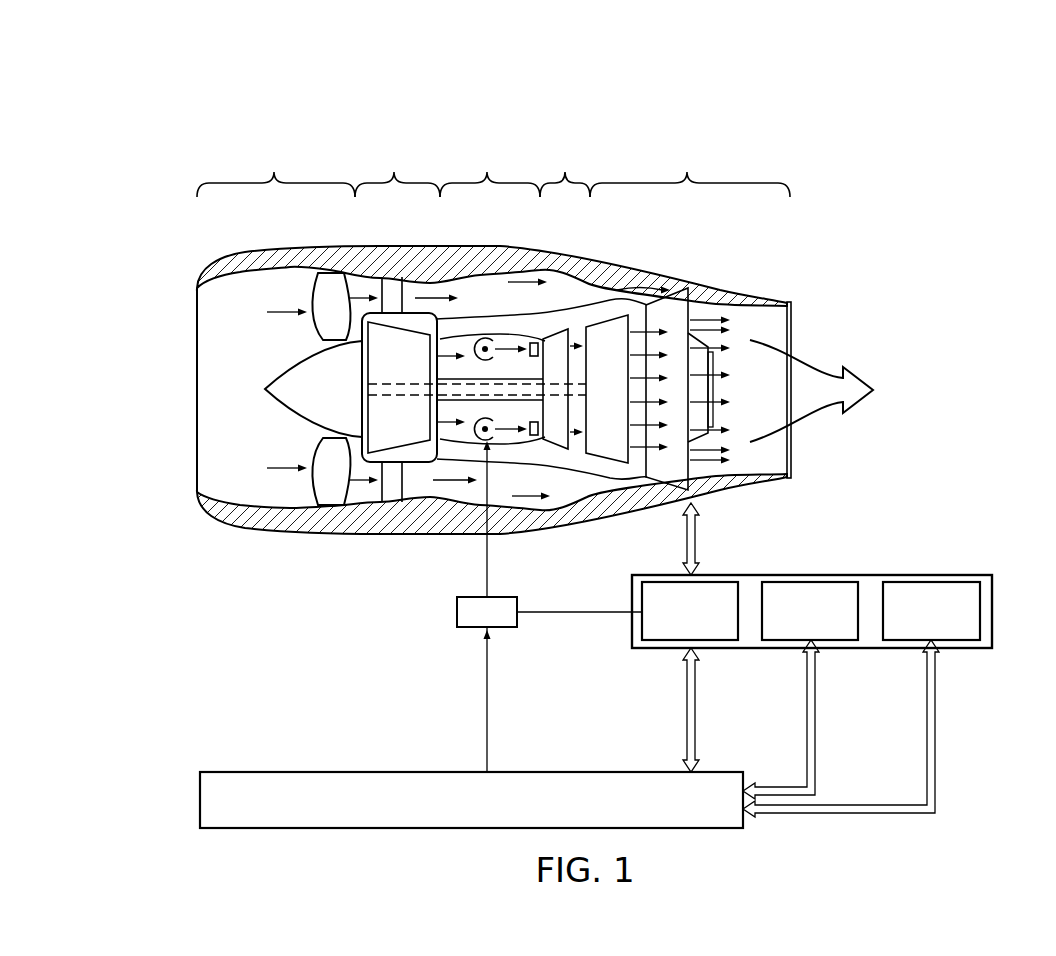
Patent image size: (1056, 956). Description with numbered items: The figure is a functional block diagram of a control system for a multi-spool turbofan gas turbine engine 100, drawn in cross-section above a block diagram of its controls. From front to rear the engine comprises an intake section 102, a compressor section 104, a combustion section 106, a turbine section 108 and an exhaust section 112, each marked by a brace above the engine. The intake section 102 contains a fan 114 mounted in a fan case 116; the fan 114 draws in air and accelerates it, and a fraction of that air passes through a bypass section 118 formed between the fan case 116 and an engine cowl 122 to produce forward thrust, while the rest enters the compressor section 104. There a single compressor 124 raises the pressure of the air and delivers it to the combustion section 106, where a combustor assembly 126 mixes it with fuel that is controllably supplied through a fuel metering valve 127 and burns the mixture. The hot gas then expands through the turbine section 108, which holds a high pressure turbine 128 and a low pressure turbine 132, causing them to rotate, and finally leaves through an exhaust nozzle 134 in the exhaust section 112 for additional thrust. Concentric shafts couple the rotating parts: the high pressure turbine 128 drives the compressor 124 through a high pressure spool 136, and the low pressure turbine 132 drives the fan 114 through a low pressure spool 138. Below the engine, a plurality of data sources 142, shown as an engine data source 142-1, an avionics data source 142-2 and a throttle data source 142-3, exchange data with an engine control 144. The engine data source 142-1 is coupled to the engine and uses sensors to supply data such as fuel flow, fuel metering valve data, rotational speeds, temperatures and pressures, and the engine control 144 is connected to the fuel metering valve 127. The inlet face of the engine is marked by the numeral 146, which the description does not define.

The multi-spool turbofan gas turbine engine 100 is at (781, 134).
The intake section 102 is at (276, 324).
The compressor section 104 is at (397, 323).
The combustion section 106 is at (490, 170).
The turbine section 108 is at (565, 170).
The exhaust section 112 is at (690, 317).
The fan 114 is at (342, 400).
The fan case 116 is at (319, 247).
The bypass section 118 is at (492, 280).
The engine cowl 122 is at (437, 316).
The compressor 124 is at (384, 371).
The combustor assembly 126 is at (485, 339).
The fuel metering valve 127 is at (503, 596).
The high pressure turbine 128 is at (544, 339).
The low pressure turbine 132 is at (600, 323).
The exhaust nozzle 134 is at (791, 328).
The high pressure spool 136 is at (456, 396).
The low pressure spool 138 is at (468, 392).
The data sources 142 is at (992, 618).
The engine data source 142-1 is at (722, 582).
The avionics data source 142-2 is at (813, 582).
The throttle data source 142-3 is at (937, 582).
The engine control 144 is at (303, 773).
The inlet 146 is at (197, 390).